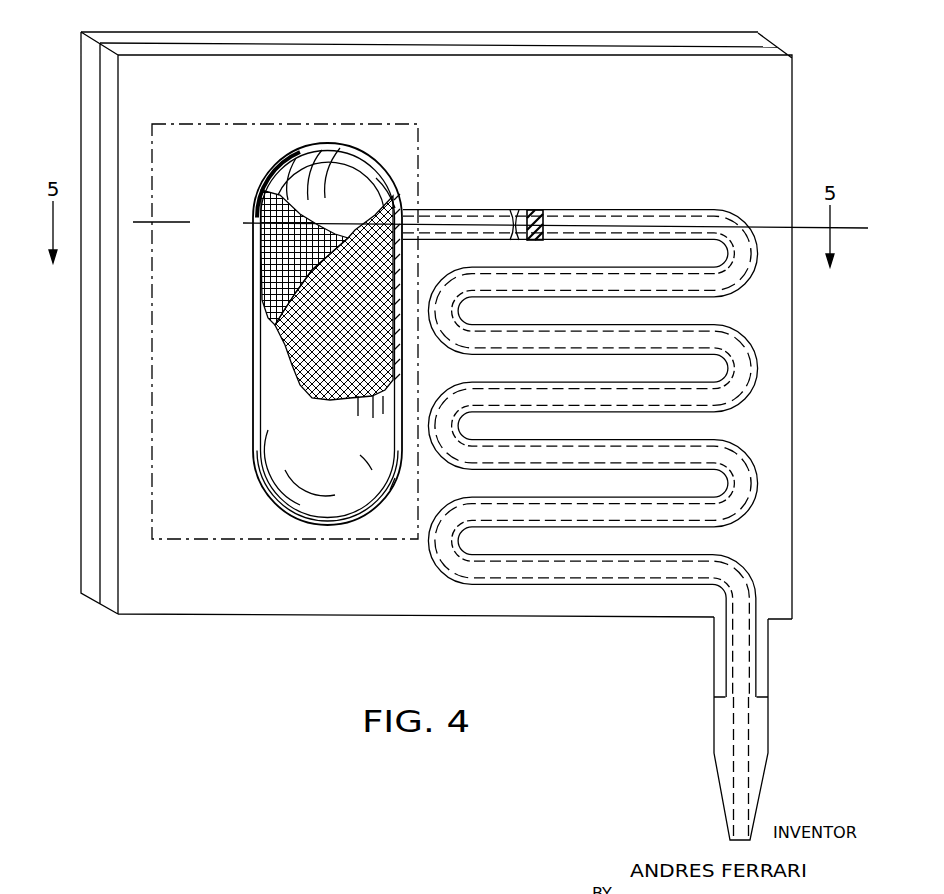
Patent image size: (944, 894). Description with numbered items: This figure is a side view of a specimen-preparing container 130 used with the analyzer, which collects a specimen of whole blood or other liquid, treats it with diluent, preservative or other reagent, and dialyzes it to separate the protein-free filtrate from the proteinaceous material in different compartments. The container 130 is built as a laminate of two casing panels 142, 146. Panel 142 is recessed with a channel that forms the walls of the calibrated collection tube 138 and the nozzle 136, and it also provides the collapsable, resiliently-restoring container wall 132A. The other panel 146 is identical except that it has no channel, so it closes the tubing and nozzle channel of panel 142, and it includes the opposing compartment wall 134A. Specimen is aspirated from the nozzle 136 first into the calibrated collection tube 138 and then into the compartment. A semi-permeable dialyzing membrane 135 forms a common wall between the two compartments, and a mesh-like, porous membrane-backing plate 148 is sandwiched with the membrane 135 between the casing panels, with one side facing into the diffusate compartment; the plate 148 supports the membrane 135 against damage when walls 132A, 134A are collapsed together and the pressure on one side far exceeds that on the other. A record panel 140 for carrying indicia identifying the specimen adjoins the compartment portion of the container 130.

The container 130 is at (146, 27).
The casing panel 146 is at (754, 45).
The casing panel 142 is at (778, 50).
The membrane-backing plate 148 is at (273, 234).
The compartment wall 134A is at (318, 198).
The calibrated collection tube 138 is at (398, 204).
The semi-permeable dialyzing membrane 135 is at (362, 323).
The container wall 132A is at (312, 427).
The record panel 140 is at (237, 566).
The nozzle 136 is at (742, 845).